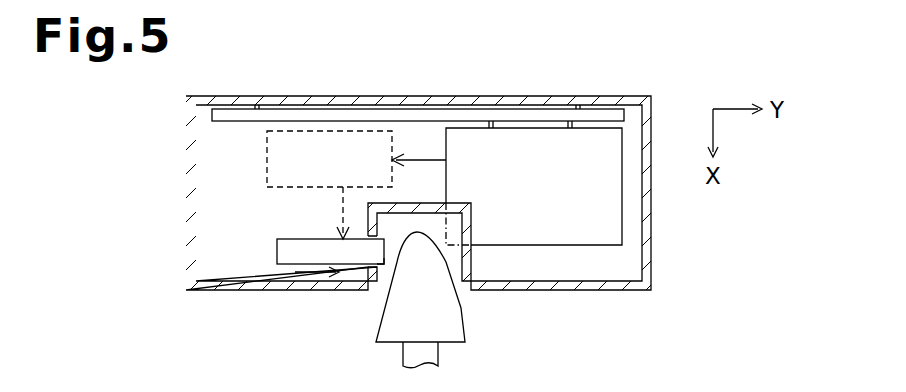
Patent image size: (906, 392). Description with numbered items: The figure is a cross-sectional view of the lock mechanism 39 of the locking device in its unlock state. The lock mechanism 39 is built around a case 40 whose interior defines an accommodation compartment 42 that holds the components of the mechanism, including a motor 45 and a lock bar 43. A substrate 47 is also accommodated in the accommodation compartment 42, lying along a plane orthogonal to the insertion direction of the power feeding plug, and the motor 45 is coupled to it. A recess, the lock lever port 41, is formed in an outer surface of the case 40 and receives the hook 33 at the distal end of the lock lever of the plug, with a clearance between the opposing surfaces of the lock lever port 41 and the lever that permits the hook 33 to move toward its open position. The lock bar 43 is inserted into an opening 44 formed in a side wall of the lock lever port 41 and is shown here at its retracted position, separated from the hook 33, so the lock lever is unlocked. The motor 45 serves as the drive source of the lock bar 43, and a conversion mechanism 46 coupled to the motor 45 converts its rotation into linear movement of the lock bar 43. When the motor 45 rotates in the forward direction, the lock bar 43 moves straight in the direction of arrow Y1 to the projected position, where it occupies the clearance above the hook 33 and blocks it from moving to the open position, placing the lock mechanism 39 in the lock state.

The hook 33 is at (452, 320).
The lock mechanism 39 is at (669, 72).
The case 40 is at (651, 219).
The lock lever port 41 is at (379, 263).
The accommodation compartment 42 is at (640, 256).
The lock bar 43 is at (277, 250).
The opening 44 is at (380, 278).
The motor 45 is at (592, 238).
The conversion mechanism 46 is at (267, 163).
The substrate 47 is at (308, 118).
The arrow Y1 is at (318, 273).